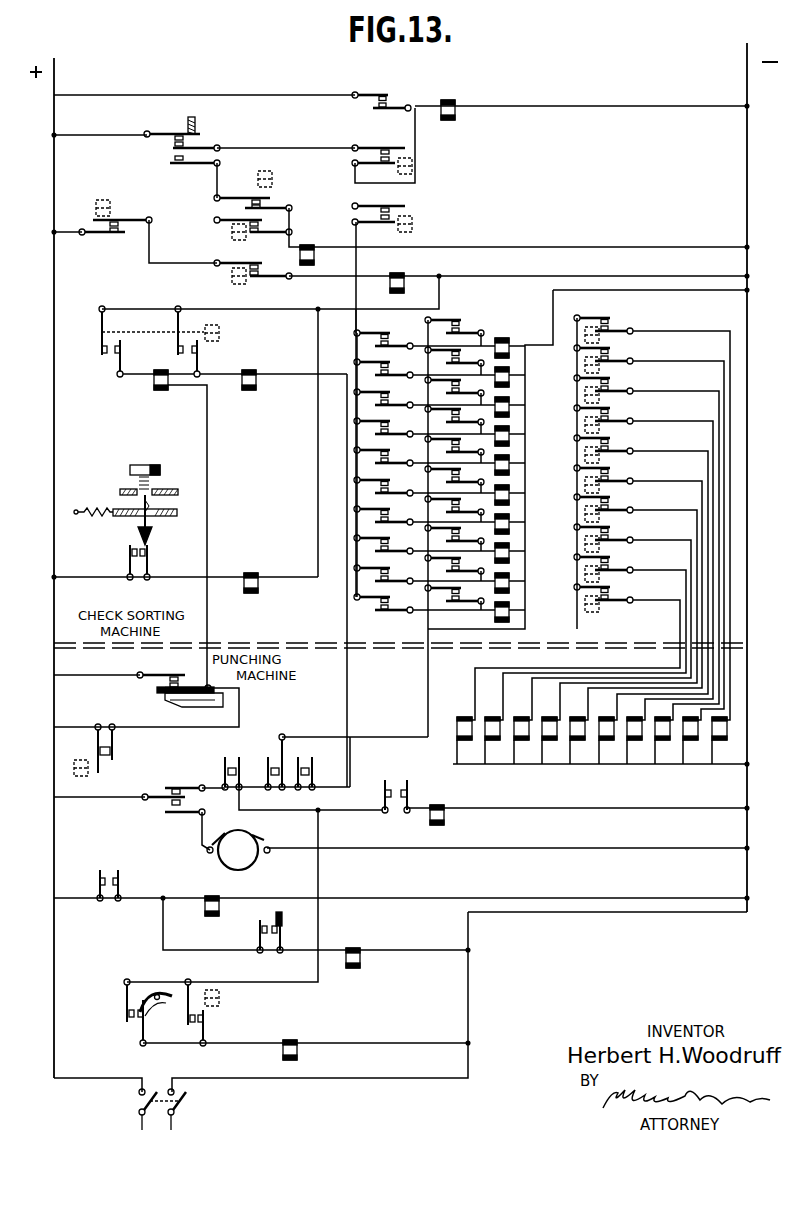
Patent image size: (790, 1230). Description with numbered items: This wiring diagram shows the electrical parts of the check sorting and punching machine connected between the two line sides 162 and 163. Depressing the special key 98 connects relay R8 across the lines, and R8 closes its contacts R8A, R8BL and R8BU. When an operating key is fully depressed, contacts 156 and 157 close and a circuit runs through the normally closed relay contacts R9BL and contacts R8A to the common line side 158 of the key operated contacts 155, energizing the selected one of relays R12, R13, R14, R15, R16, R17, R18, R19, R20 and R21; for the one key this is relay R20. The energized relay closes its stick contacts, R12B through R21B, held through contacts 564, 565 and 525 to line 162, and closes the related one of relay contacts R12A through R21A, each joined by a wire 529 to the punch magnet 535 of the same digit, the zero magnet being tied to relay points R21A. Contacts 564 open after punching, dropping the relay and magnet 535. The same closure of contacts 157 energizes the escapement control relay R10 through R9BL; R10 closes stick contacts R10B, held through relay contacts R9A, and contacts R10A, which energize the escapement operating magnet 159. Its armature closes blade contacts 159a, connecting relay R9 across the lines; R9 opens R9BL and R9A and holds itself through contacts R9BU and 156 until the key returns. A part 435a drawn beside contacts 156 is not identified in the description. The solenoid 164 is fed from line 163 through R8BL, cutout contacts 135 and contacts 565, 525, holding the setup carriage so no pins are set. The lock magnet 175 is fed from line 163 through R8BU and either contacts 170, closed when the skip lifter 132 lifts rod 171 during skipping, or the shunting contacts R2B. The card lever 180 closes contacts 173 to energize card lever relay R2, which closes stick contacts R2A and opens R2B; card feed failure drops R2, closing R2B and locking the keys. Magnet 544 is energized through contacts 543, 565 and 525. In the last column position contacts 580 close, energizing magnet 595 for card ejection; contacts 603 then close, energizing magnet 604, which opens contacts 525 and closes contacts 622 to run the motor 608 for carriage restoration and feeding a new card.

The line side 162 is at (54, 186).
The line side 163 is at (747, 153).
The blade contacts 159a is at (384, 102).
The relay R9 is at (452, 104).
The card lever 435a is at (194, 128).
The contacts 156 is at (192, 146).
The contacts 157 is at (170, 153).
The upper relay contacts of relay R9 R9BU is at (368, 159).
The relay contacts of relay R8 R8A is at (388, 213).
The relay R8 is at (413, 226).
The lower relay contacts of relay R9 R9BL is at (272, 198).
The relay contacts of relay R9 R9A is at (122, 233).
The escapement control relay R10 is at (308, 245).
The stick contacts of relay R10 R10B is at (253, 236).
The relay contacts of relay R10 R10A is at (253, 280).
The escapement operating magnet 159 is at (398, 274).
The common line side 158 is at (356, 323).
The upper relay contacts of relay R8 R8BU is at (132, 347).
The lower relay contacts of relay R8 R8BL is at (176, 351).
The lock magnet 175 is at (160, 389).
The solenoid 164 is at (257, 363).
The special key 98 is at (158, 469).
The key operated contacts 155 is at (394, 345).
The stick contacts of relay R12 R12B is at (466, 322).
The stick contacts of relay R21 R21B is at (456, 600).
The relay R12 is at (582, 334).
The relay R13 is at (582, 364).
The relay R14 is at (582, 394).
The relay R15 is at (582, 424).
The relay R16 is at (582, 454).
The relay R17 is at (582, 484).
The relay R18 is at (582, 513).
The relay R19 is at (582, 543).
The relay R20 is at (582, 573).
The relay R21 is at (582, 603).
The relay contacts of relay R12 R12A is at (600, 316).
The relay points of relay R21 R21A is at (621, 601).
The wire 529 is at (676, 486).
The punch magnet 535 is at (727, 742).
The contacts 170 is at (178, 675).
The rod 171 is at (157, 690).
The skip lifter 132 is at (194, 709).
The relay contacts of relay R2 R2B is at (113, 751).
The card lever relay R2 is at (303, 1035).
The contacts 525 is at (148, 795).
The contacts 622 is at (165, 810).
The contacts 565 is at (226, 762).
The contacts 564 is at (270, 757).
The cutout contacts 135 is at (304, 758).
The contacts 543 is at (397, 772).
The magnet 544 is at (442, 801).
The motor 608 is at (256, 845).
The contacts 580 is at (107, 873).
The magnet 595 is at (207, 897).
The contacts 603 is at (258, 934).
The magnet 604 is at (352, 948).
The card lever contacts 173 is at (127, 1028).
The card lever 180 is at (165, 1012).
The stick contacts of relay R2 R2A is at (205, 1030).